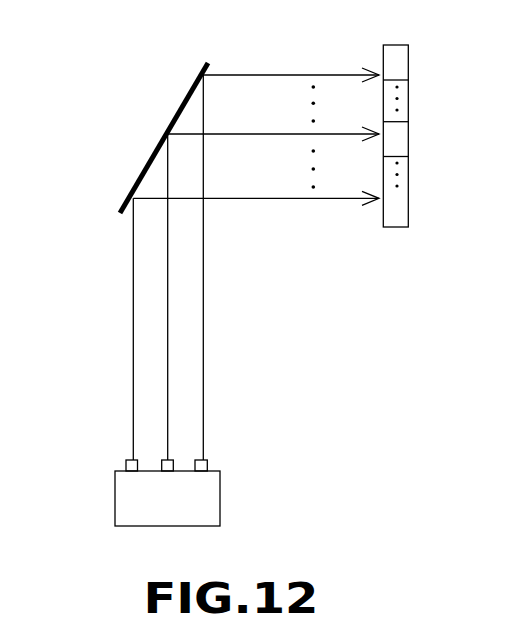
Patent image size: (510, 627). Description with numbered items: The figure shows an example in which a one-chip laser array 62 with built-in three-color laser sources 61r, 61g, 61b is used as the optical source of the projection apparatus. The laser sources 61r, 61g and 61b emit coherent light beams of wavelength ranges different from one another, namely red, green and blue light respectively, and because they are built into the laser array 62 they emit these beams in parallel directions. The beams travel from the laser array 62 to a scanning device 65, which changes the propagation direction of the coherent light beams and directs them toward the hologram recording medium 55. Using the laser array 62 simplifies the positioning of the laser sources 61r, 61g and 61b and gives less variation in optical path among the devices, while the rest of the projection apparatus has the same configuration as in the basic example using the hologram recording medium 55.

The scanning device 65 is at (142, 172).
The hologram recording medium 55 is at (392, 222).
The one-chip laser array 62 is at (210, 511).
The laser source 61r is at (126, 462).
The laser source 61g is at (175, 469).
The laser source 61b is at (208, 462).